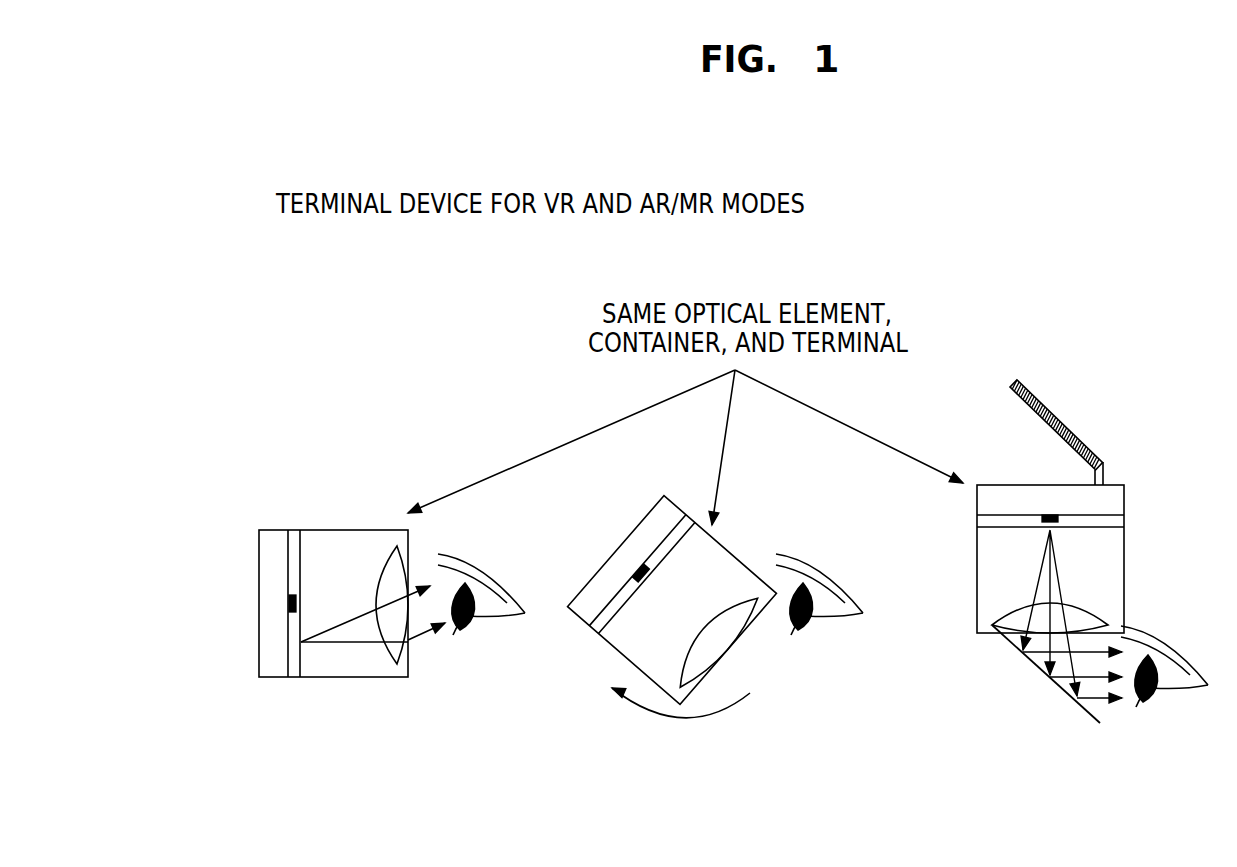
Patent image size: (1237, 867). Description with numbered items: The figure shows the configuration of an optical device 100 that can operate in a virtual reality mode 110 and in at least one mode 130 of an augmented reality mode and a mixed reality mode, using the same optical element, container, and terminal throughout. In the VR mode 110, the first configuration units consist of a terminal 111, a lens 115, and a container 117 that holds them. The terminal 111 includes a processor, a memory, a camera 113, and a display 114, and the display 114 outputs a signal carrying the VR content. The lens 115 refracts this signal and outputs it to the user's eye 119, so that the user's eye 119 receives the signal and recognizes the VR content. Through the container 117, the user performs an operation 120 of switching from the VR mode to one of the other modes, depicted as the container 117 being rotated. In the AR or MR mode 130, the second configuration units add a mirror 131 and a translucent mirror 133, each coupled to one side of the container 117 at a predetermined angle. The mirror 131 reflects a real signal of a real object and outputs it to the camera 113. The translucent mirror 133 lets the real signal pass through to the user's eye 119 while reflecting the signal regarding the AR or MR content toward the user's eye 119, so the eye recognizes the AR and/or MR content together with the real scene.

The optical device 100 is at (1205, 236).
The virtual reality mode 110 is at (357, 824).
The terminal 111 is at (295, 530).
The camera 113 is at (288, 602).
The display 114 is at (301, 660).
The lens 115 is at (405, 557).
The container 117 is at (352, 530).
The user's eye 119 is at (487, 616).
The operation of switching 120 is at (700, 853).
The augmented reality mode or mixed reality mode 130 is at (1077, 824).
The mirror 131 is at (1049, 430).
The translucent mirror 133 is at (1033, 662).